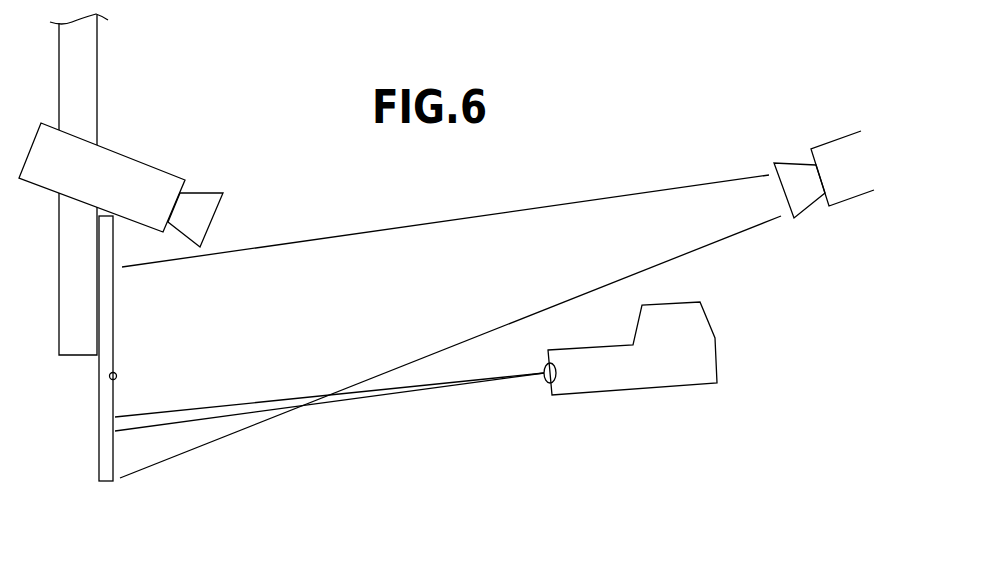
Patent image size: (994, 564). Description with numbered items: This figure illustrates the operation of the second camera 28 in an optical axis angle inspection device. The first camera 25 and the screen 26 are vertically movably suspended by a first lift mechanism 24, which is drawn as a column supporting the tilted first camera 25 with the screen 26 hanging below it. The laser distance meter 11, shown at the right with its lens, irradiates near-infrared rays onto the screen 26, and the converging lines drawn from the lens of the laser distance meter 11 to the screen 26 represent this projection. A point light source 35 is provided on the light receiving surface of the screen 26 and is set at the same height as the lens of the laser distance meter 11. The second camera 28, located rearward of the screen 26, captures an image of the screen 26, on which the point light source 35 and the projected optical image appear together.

The first lift mechanism 24 is at (78, 62).
The first camera 25 is at (137, 190).
The screen 26 is at (105, 475).
The second camera 28 is at (847, 152).
The point light source 35 is at (118, 375).
The laser distance meter 11 is at (630, 380).